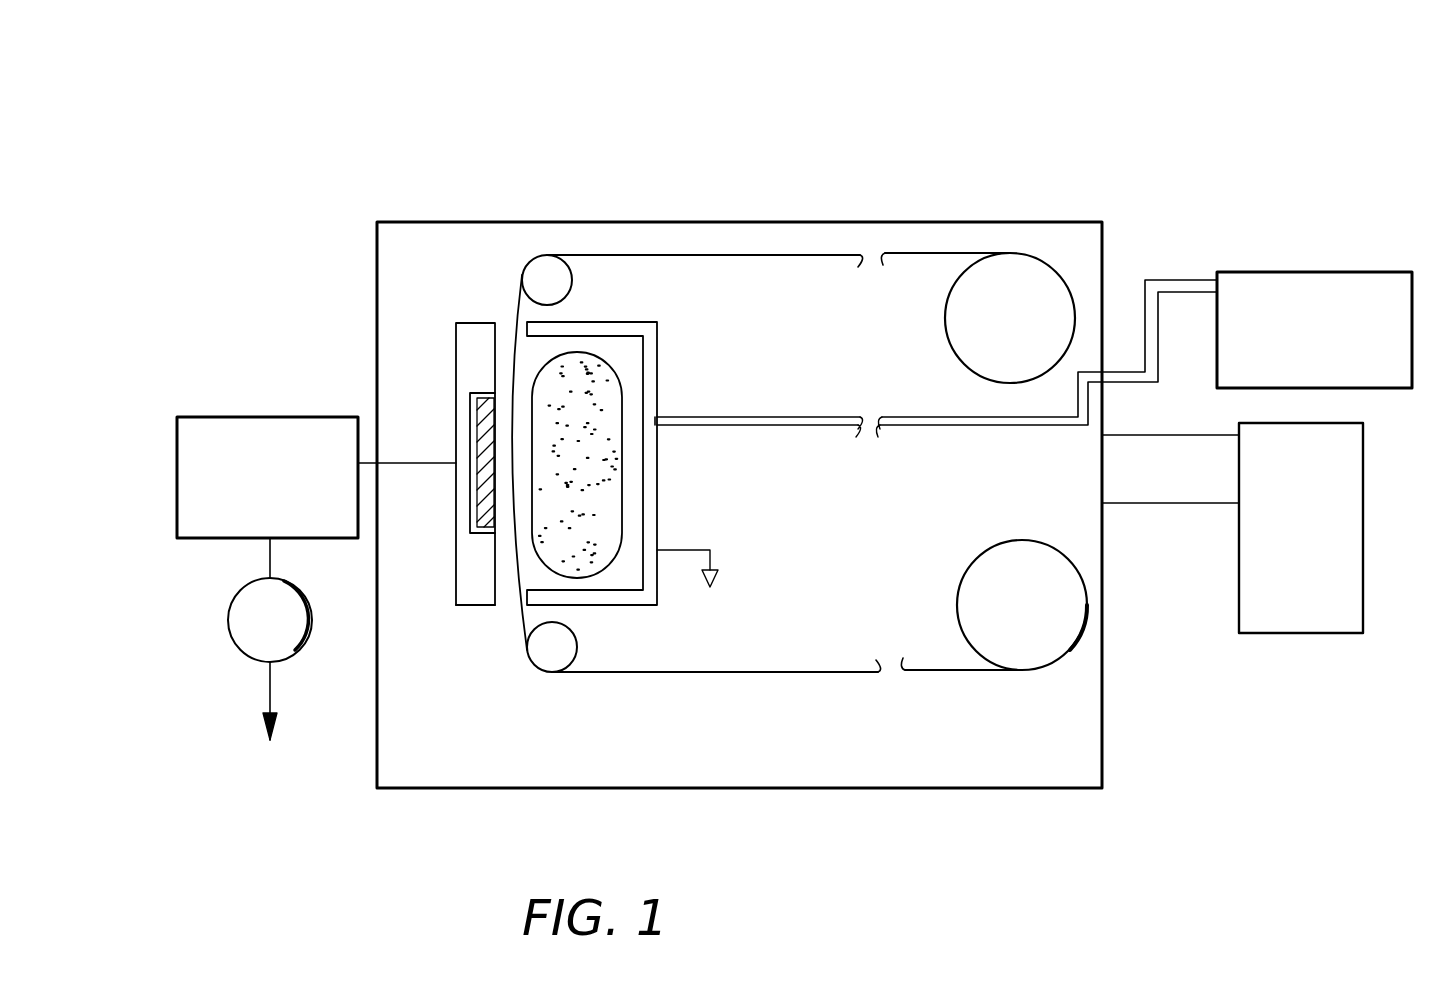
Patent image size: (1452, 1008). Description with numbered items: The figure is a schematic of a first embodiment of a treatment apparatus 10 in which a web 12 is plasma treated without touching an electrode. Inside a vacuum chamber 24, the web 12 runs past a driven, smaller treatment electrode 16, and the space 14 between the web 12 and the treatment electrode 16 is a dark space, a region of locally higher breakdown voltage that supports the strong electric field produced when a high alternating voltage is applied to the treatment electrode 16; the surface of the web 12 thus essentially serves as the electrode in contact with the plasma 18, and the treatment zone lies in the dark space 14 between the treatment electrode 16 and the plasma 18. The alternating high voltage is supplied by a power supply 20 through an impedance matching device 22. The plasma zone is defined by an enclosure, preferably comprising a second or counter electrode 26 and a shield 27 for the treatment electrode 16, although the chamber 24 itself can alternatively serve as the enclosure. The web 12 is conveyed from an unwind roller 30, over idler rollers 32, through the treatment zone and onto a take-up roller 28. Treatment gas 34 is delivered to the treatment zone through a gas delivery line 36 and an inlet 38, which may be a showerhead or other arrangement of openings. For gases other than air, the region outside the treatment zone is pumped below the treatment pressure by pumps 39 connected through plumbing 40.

The treatment apparatus 10 is at (990, 192).
The web 12 is at (508, 363).
The dark space 14 is at (495, 392).
The treatment electrode 16 is at (480, 413).
The plasma 18 is at (640, 487).
The power supply 20 is at (237, 598).
The impedance matching device 22 is at (225, 416).
The chamber 24 is at (900, 789).
The second electrode 26 is at (660, 332).
The shield 27 is at (472, 607).
The take-up roller 28 is at (957, 596).
The unwind roller 30 is at (945, 317).
The idler rollers 32 is at (573, 282).
The treatment gas 34 is at (1247, 271).
The gas delivery line 36 is at (732, 425).
The inlet 38 is at (653, 417).
The pumps 39 is at (1363, 460).
The plumbing 40 is at (1173, 488).